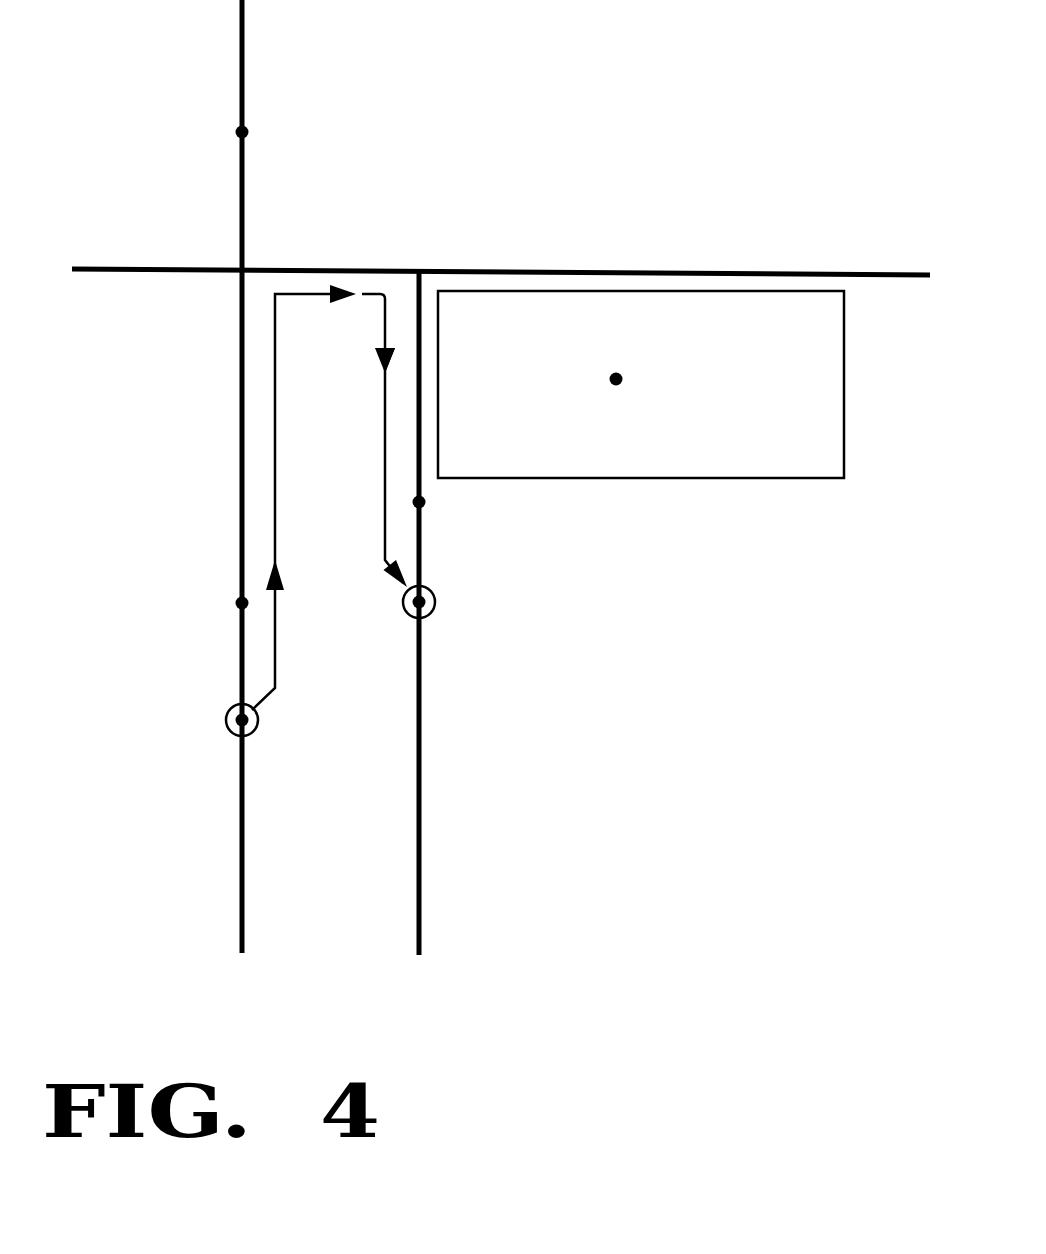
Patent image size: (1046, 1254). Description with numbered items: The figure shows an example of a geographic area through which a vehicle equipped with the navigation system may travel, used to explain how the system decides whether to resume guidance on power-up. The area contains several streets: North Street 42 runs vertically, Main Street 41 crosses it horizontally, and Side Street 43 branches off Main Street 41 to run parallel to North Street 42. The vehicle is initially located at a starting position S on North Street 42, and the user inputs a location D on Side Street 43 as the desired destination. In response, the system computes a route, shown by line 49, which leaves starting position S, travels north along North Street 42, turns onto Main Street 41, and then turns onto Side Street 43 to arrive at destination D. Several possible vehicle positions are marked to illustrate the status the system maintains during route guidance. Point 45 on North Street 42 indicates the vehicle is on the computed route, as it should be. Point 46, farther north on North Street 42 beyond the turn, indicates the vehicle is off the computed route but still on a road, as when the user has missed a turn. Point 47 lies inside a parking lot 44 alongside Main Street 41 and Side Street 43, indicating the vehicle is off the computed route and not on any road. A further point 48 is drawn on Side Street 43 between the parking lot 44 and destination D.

The Main Street 41 is at (725, 270).
The North Street 42 is at (244, 47).
The Side Street 43 is at (422, 707).
The parking lot 44 is at (836, 469).
The point 45 is at (238, 600).
The point 46 is at (244, 130).
The point 47 is at (622, 385).
The node on Side Street 48 is at (425, 507).
The line 49 is at (276, 425).
The starting position S is at (228, 714).
The location D is at (431, 612).